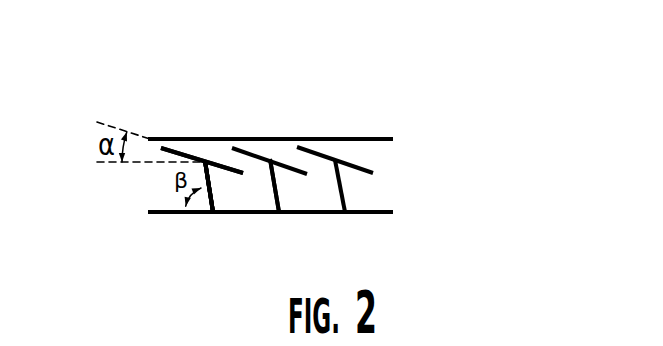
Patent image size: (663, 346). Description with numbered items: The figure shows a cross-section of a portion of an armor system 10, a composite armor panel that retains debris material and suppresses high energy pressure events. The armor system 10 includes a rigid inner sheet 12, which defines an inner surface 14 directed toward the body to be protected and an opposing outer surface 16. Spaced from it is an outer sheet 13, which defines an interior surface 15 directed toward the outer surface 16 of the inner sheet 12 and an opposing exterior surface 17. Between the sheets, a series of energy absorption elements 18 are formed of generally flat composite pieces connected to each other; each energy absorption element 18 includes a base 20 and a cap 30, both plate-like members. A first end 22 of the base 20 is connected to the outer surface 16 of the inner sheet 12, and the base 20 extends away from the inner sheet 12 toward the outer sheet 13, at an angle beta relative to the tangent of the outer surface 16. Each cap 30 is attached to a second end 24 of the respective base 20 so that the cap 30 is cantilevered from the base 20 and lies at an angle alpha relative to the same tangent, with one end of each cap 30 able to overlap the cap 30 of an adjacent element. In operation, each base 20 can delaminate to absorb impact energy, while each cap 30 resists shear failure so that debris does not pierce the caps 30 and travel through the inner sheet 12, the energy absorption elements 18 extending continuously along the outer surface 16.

The armor system 10 is at (520, 100).
The inner sheet 12 is at (403, 214).
The outer sheet 13 is at (402, 136).
The inner surface 14 is at (378, 213).
The interior surface 15 is at (378, 140).
The outer surface 16 is at (378, 212).
The exterior surface 17 is at (385, 138).
The energy absorption element 18 is at (234, 186).
The base 20 is at (220, 197).
The first end 22 is at (207, 213).
The second end 24 is at (205, 160).
The cap 30 is at (198, 154).